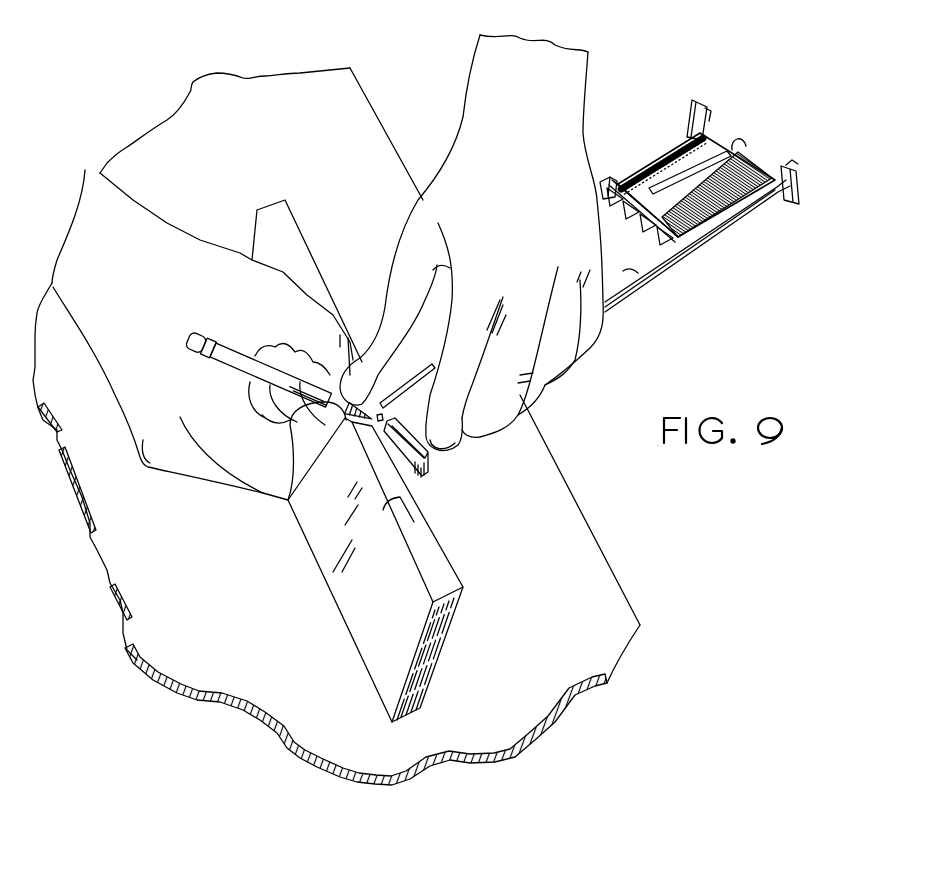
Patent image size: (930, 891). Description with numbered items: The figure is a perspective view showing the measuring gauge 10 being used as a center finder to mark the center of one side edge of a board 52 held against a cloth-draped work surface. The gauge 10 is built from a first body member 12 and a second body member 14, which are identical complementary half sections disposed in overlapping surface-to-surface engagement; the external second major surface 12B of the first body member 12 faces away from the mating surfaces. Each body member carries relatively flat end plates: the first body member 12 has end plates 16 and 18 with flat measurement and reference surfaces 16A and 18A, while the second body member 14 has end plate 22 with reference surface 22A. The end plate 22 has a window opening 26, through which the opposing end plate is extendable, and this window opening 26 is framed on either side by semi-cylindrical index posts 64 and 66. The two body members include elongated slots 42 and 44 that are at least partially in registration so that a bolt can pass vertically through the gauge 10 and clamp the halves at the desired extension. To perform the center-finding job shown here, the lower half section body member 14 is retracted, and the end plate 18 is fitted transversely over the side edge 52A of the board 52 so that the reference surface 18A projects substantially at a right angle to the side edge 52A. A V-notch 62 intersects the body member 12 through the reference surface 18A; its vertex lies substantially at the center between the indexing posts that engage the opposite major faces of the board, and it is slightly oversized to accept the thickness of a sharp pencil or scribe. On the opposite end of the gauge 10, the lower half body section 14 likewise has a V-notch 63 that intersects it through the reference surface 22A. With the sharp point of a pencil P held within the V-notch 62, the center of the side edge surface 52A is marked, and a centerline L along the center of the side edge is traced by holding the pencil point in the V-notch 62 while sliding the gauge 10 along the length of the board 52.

The measuring gauge 10 is at (595, 252).
The first body member 12 is at (618, 303).
The second major surface 12B is at (638, 273).
The second body member 14 is at (727, 220).
The end plate 16 is at (680, 247).
The flat surface 16A is at (617, 180).
The end plate 18 is at (427, 470).
The reference surface 18A is at (400, 445).
The end plate 22 is at (688, 109).
The reference surface 22A is at (797, 190).
The window opening 26 is at (756, 146).
The elongated slot 42 is at (422, 373).
The elongated slot 44 is at (727, 207).
The board 52 is at (385, 617).
The side edge 52A is at (430, 543).
The V-notch 62 is at (380, 418).
The V-notch 63 is at (697, 140).
The semi-cylindrical index post 64 is at (704, 115).
The semi-cylindrical index post 66 is at (786, 160).
The pencil P is at (242, 360).
The centerline L is at (397, 497).